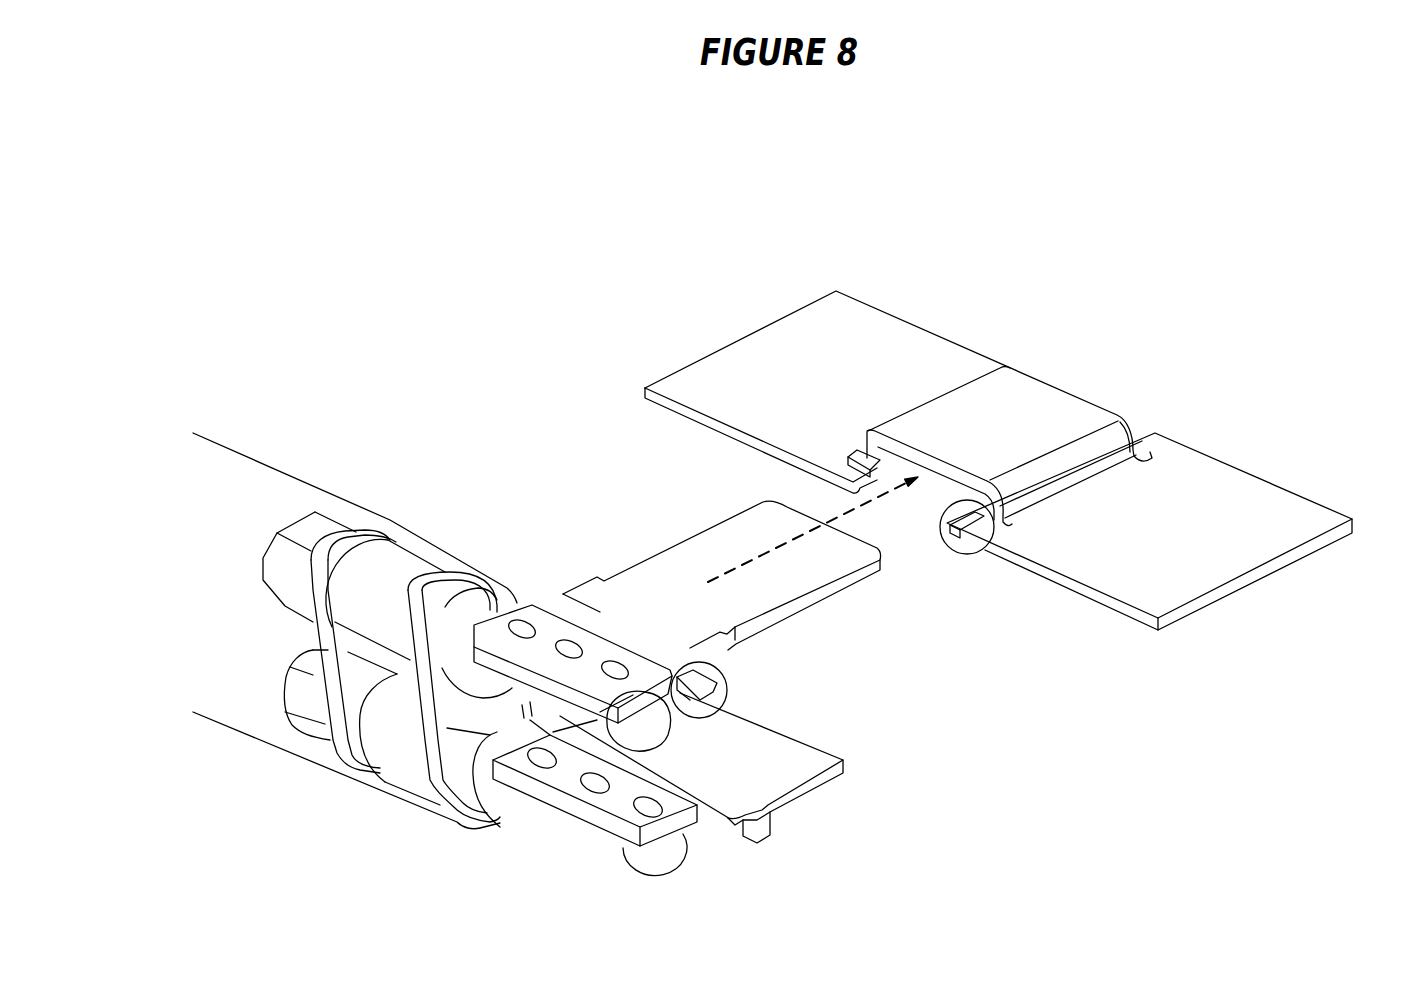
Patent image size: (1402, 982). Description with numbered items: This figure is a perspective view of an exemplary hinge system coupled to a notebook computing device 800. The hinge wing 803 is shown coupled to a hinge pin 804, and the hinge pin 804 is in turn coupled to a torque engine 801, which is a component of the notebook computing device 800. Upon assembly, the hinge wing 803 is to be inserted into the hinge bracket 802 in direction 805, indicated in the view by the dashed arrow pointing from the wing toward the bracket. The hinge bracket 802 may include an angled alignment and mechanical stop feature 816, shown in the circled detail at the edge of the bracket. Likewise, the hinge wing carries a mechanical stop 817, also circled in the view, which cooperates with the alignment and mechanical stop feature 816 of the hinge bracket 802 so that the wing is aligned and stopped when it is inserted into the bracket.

The notebook computing device 800 is at (272, 305).
The torque engine 801 is at (413, 571).
The hinge bracket 802 is at (1165, 560).
The hinge wing 803 is at (802, 615).
The hinge pin 804 is at (650, 728).
The direction 805 is at (813, 529).
The angled alignment and mechanical stop feature 816 is at (945, 547).
The mechanical stop 817 is at (727, 680).